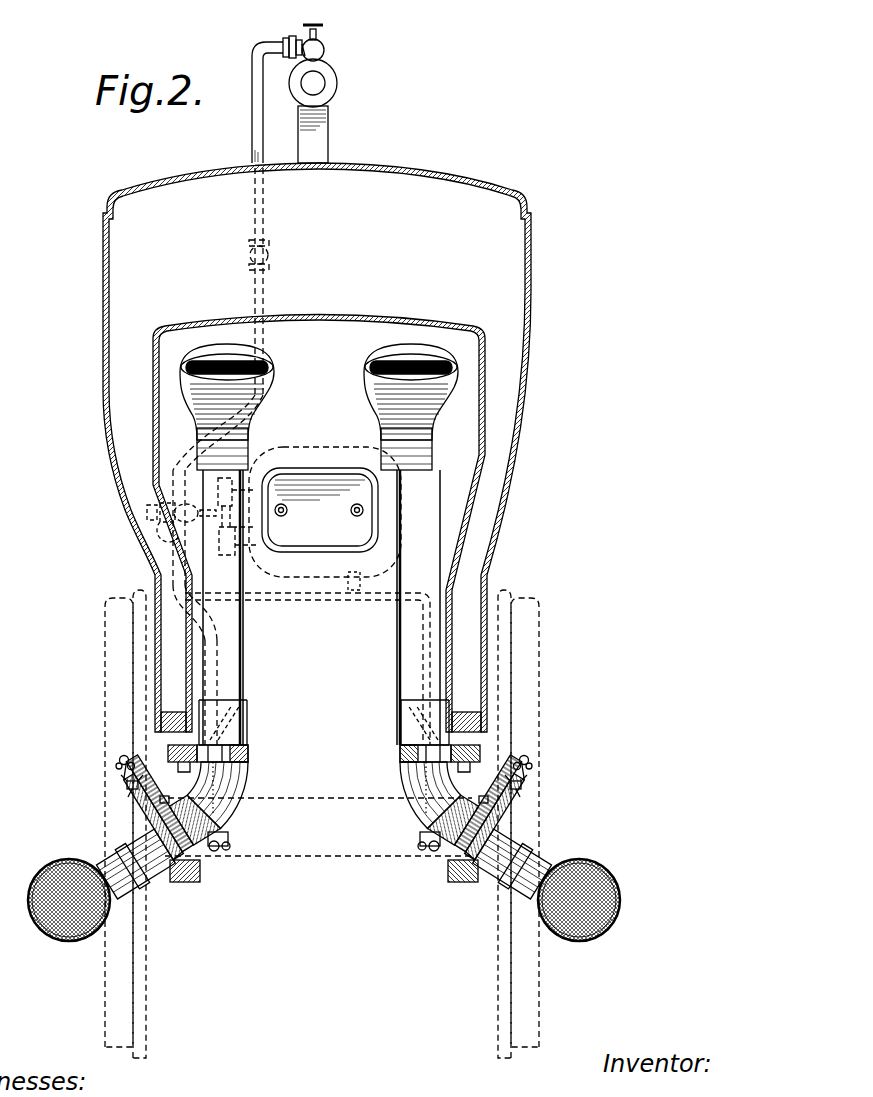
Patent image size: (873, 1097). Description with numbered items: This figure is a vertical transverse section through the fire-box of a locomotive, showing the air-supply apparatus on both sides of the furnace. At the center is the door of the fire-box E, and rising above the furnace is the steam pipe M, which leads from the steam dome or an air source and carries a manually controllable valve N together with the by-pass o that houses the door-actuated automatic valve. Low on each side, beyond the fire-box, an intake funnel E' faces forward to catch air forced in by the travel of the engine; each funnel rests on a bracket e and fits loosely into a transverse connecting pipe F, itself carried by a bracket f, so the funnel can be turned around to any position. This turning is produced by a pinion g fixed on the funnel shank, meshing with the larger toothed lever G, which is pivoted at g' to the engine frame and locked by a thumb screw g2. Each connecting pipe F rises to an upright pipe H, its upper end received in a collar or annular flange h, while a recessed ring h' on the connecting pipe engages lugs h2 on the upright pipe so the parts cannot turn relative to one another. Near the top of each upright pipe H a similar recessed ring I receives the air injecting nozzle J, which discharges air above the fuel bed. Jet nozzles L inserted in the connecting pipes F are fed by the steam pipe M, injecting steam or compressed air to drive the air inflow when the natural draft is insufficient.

The steam pipe M is at (250, 124).
The air injecting nozzle J is at (400, 410).
The recessed ring I is at (250, 460).
The upright pipe H is at (236, 627).
The door of the fire-box E is at (325, 518).
The by-pass o is at (160, 493).
The manually controllable valve N is at (170, 522).
The transverse connecting pipe F is at (232, 806).
The intake funnel E' is at (324, 882).
The toothed lever G is at (150, 800).
The bracket e is at (201, 871).
The jet nozzle L is at (230, 838).
The bracket f is at (185, 745).
The recessed ring h' is at (324, 764).
The collar or annular flange h is at (324, 722).
The lug h2 is at (238, 725).
The thumb screw g2 is at (118, 762).
The pivot g' is at (335, 792).
The pinion g is at (304, 841).